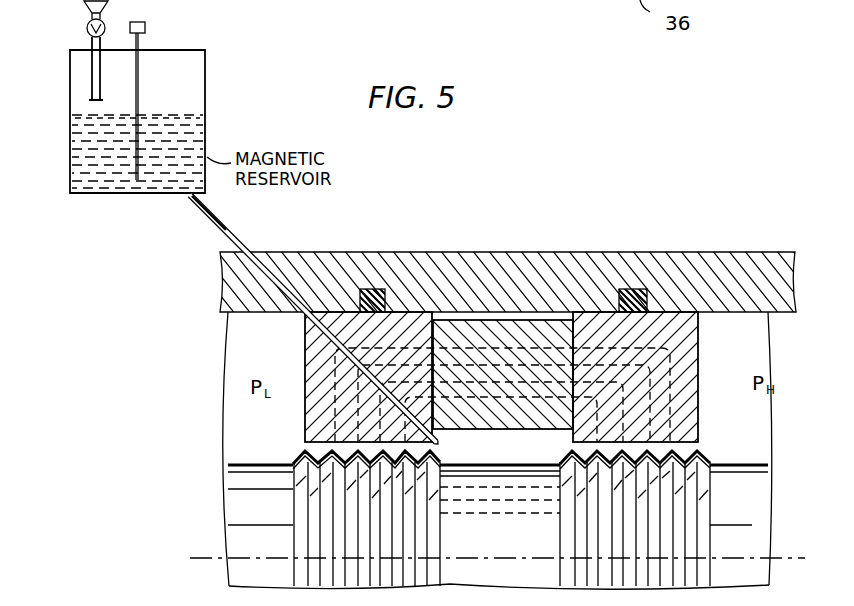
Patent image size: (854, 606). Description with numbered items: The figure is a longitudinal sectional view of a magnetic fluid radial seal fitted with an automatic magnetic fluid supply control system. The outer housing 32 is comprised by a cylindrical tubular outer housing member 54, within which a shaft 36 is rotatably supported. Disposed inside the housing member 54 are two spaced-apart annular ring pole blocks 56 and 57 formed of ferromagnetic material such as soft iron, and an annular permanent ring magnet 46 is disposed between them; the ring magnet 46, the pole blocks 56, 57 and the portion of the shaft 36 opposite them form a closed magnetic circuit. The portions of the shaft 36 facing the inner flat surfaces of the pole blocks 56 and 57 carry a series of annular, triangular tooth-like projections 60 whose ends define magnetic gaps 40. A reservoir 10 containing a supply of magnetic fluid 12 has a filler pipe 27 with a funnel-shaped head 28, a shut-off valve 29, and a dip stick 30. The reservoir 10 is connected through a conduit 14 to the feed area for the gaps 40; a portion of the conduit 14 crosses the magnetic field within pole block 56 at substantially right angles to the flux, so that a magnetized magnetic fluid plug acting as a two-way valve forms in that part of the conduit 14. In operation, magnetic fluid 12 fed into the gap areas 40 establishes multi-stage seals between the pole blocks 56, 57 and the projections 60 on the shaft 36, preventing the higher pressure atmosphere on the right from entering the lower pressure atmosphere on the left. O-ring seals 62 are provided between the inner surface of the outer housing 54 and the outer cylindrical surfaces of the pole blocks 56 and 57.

The reservoir 10 is at (183, 58).
The magnetic fluid 12 is at (137, 151).
The conduit 14 is at (228, 236).
The filler pipe 27 is at (90, 40).
The funnel-shaped head 28 is at (84, 8).
The shut-off valve 29 is at (86, 29).
The dip stick 30 is at (140, 41).
The outer housing 32 is at (547, 224).
The shaft 36 is at (270, 547).
The magnetic gaps 40 is at (432, 449).
The annular permanent ring magnet 46 is at (456, 318).
The cylindrical tubular outer housing member 54 is at (602, 262).
The annular ring pole block 56 is at (303, 349).
The annular ring pole block 57 is at (699, 378).
The tooth-like projections 60 is at (318, 462).
The O-ring seals 62 is at (372, 289).